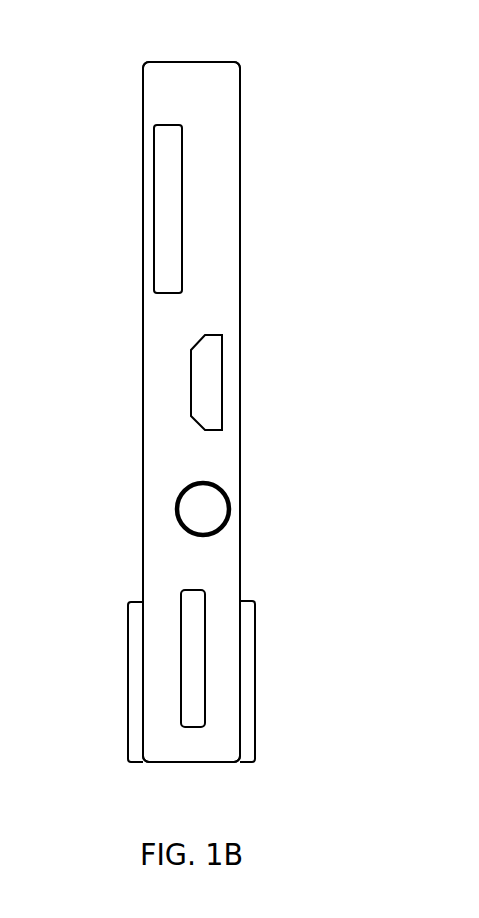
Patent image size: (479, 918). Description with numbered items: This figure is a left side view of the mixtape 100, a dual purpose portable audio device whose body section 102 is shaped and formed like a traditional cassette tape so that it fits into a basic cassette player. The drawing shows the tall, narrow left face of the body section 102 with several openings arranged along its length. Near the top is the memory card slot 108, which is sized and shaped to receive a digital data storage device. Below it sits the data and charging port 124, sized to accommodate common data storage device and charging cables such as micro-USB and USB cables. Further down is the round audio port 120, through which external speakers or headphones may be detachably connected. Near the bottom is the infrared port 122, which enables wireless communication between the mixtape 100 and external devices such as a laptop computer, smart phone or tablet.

The mixtape 100 is at (330, 100).
The body section 102 is at (222, 245).
The memory card slot 108 is at (153, 212).
The audio port 120 is at (230, 509).
The infrared port 122 is at (180, 607).
The data and charging port 124 is at (222, 387).